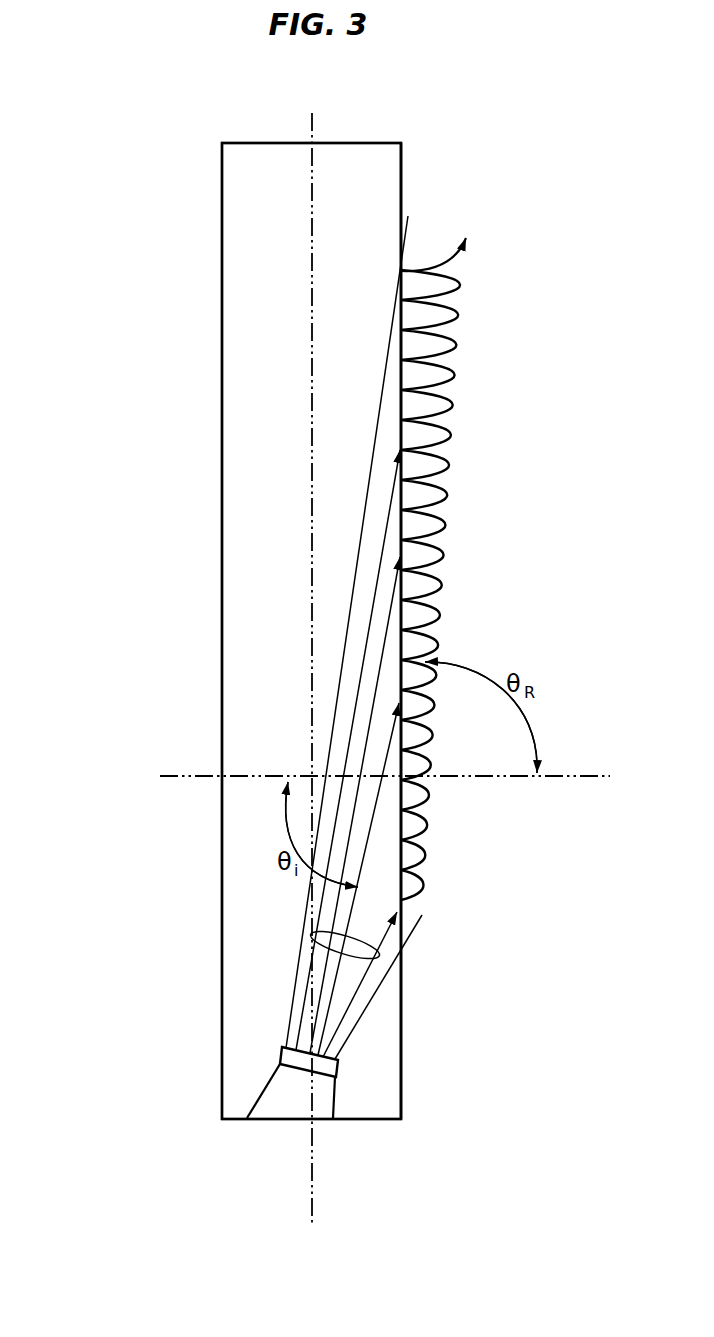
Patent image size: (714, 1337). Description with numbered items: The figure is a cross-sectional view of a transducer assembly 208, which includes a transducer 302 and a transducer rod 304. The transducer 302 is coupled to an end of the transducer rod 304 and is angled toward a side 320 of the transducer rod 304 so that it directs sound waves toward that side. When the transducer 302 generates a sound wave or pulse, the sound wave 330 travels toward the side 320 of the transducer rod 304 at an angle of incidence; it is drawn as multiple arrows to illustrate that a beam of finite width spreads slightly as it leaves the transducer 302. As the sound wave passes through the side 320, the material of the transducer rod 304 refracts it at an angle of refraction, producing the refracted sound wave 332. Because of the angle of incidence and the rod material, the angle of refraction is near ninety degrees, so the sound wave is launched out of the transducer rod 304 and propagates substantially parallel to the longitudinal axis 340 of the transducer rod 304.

The transducer assembly 208 is at (130, 201).
The transducer rod 304 is at (222, 358).
The side of transducer rod 320 is at (401, 1060).
The transducer 302 is at (280, 1058).
The sound wave 330 is at (373, 957).
The refracted sound wave 332 is at (452, 403).
The longitudinal axis 340 is at (312, 1182).